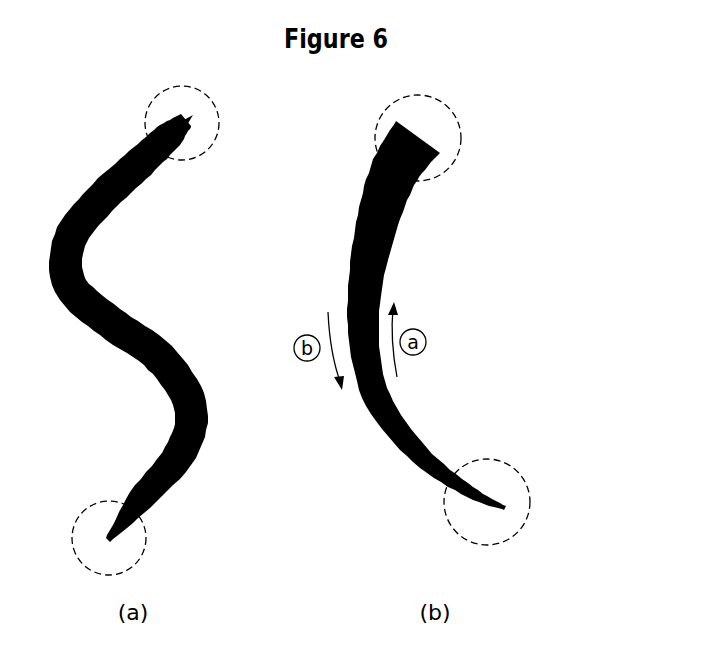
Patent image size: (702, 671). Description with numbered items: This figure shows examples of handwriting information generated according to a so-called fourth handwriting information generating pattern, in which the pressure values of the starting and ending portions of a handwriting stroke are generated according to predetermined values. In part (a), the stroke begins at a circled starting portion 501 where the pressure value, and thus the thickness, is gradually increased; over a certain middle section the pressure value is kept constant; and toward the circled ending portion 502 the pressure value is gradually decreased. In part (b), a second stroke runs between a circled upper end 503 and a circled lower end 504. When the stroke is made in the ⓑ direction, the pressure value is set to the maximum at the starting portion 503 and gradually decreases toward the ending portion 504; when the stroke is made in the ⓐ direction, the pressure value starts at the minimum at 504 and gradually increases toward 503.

The start point of stroke (a) 501 is at (217, 117).
The end point of stroke (a) 502 is at (145, 537).
The start point of stroke (b) 503 is at (462, 137).
The end point of stroke (b) 504 is at (530, 498).